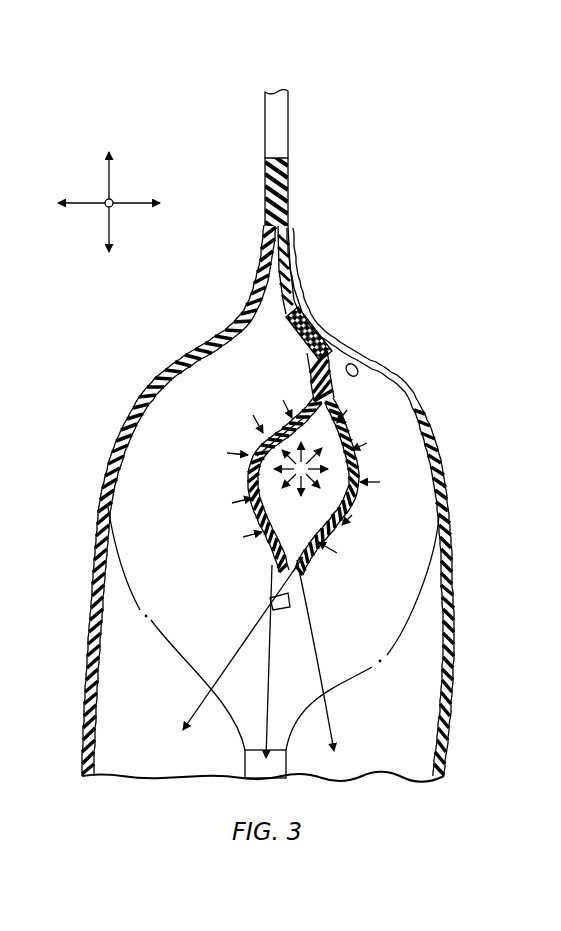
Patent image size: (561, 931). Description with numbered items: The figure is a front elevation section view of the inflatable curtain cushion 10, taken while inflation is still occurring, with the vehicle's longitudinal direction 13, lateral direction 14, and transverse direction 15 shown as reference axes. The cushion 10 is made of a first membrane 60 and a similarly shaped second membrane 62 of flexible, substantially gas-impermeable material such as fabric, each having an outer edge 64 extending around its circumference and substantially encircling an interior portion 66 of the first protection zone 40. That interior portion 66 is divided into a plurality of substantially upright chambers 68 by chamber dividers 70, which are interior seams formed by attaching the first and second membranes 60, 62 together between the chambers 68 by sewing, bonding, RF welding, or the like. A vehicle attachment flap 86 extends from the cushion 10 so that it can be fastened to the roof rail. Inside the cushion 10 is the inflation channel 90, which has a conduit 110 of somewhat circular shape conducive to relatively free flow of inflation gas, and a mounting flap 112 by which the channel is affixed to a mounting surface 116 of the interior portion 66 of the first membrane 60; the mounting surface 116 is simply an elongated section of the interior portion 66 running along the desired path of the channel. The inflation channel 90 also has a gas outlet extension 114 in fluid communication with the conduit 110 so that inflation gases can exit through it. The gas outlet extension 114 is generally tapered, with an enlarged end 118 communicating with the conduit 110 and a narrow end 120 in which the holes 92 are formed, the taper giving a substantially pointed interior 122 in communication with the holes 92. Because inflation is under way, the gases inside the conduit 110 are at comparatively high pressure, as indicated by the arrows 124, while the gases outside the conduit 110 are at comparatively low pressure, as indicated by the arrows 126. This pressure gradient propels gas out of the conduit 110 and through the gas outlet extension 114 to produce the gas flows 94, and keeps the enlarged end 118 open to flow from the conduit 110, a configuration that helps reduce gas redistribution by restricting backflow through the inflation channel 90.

The cushion 10 is at (442, 372).
The longitudinal direction 13 is at (112, 206).
The lateral direction 14 is at (142, 200).
The transverse direction 15 is at (110, 175).
The first protection zone 40 is at (457, 710).
The first membrane 60 is at (447, 593).
The second membrane 62 is at (102, 516).
The outer edge 64 is at (287, 203).
The interior portion 66 is at (355, 362).
The chamber 68 is at (391, 746).
The chamber divider 70 is at (255, 748).
The vehicle attachment flap 86 is at (278, 126).
The inflation channel 90 is at (237, 471).
The holes 92 is at (270, 575).
The gas flows 94 is at (322, 655).
The conduit 110 is at (250, 440).
The mounting flap 112 is at (304, 365).
The gas outlet extension 114 is at (262, 547).
The mounting surface 116 is at (303, 303).
The enlarged end 118 is at (325, 523).
The narrow end 120 is at (274, 573).
The pointed interior 122 is at (300, 570).
The arrows 124 is at (317, 440).
The arrows 126 is at (362, 483).